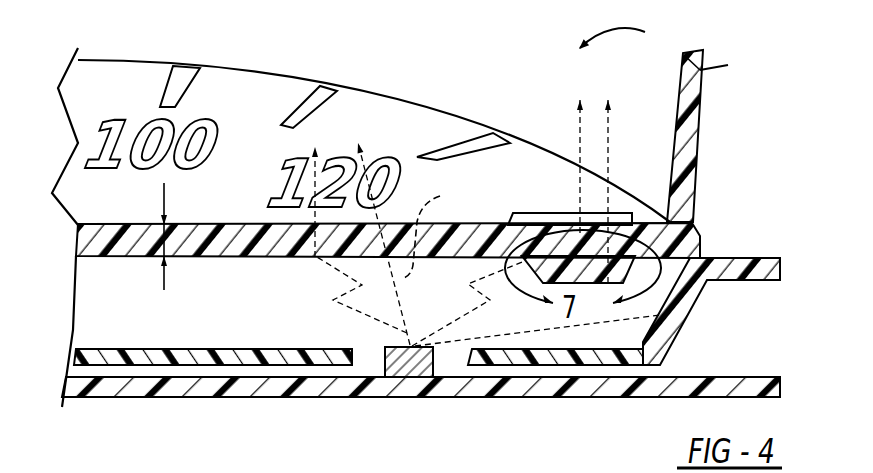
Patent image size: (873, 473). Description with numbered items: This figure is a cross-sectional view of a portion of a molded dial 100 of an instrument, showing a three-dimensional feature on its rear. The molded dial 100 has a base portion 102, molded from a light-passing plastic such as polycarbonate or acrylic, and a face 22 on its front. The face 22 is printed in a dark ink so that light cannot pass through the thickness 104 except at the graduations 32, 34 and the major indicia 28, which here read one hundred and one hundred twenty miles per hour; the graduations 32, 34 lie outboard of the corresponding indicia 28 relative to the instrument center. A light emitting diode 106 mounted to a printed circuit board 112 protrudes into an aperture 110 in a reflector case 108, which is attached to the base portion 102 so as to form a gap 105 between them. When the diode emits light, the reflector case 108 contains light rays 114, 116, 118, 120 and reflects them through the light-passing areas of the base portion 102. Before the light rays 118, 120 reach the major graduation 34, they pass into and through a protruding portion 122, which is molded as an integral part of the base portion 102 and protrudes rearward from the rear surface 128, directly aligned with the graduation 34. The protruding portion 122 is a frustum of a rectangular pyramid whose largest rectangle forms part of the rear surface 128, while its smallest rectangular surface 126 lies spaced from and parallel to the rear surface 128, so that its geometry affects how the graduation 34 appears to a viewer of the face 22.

The face 22 is at (227, 203).
The major indicia 28 is at (107, 121).
The graduation 32 is at (295, 100).
The major graduation 34 is at (187, 87).
The molded dial 100 is at (628, 34).
The base portion 102 is at (83, 237).
The thickness 104 is at (163, 238).
The gap 105 is at (120, 325).
The light emitting diode (LED) 106 is at (434, 362).
The reflector case 108 is at (692, 306).
The aperture 110 is at (357, 397).
The printed circuit board (PCB) 112 is at (540, 397).
The light ray 114 is at (364, 319).
The light ray 116 is at (430, 196).
The light ray 118 is at (580, 145).
The light ray 120 is at (607, 136).
The protruding portion 122 is at (700, 233).
The smallest rectangular surface 126 is at (508, 271).
The rear surface 128 is at (258, 257).